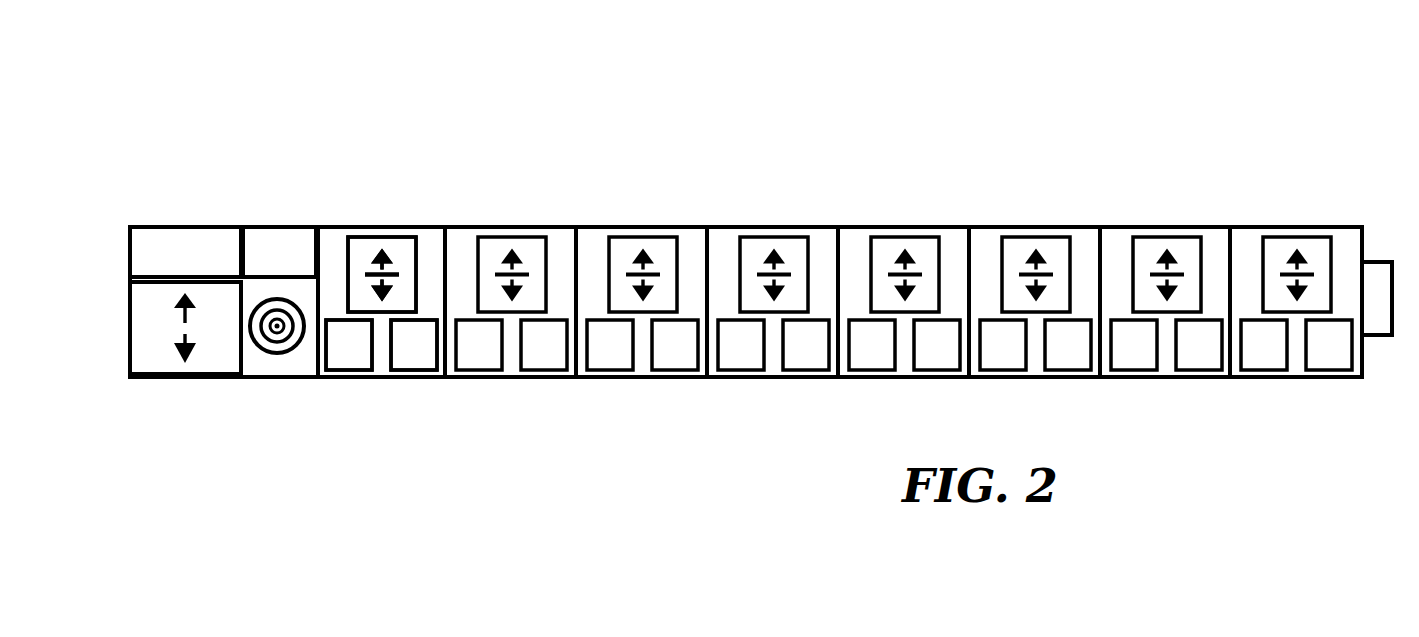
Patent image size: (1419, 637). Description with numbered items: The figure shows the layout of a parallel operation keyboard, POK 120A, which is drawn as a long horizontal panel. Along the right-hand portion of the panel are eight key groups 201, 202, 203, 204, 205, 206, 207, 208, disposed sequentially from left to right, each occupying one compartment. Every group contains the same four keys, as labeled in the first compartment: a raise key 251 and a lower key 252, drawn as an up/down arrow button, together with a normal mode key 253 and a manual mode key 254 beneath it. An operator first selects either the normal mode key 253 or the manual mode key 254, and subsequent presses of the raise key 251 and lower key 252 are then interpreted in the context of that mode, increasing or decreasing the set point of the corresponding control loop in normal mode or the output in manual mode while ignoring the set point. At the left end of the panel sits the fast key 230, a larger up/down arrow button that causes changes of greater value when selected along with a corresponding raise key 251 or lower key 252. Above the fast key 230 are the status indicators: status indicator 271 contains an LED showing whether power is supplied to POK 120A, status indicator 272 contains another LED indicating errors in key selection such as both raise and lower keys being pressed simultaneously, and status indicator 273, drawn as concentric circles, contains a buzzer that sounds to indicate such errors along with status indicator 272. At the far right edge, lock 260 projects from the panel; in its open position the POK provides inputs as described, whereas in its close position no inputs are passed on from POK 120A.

The parallel operation keyboard (POK) 120A is at (669, 72).
The first group 201 is at (433, 247).
The second group 202 is at (559, 247).
The third group 203 is at (690, 247).
The fourth group 204 is at (821, 247).
The fifth group 205 is at (952, 247).
The sixth group 206 is at (1083, 247).
The seventh group 207 is at (1213, 247).
The eighth group 208 is at (1344, 247).
The fast key 230 is at (198, 377).
The raise key 251 is at (385, 258).
The lower key 252 is at (390, 290).
The normal mode key 253 is at (353, 357).
The manual mode key 254 is at (410, 357).
The lock 260 is at (1392, 335).
The status indicator 271 is at (178, 227).
The status indicator 272 is at (262, 227).
The status indicator 273 is at (280, 353).